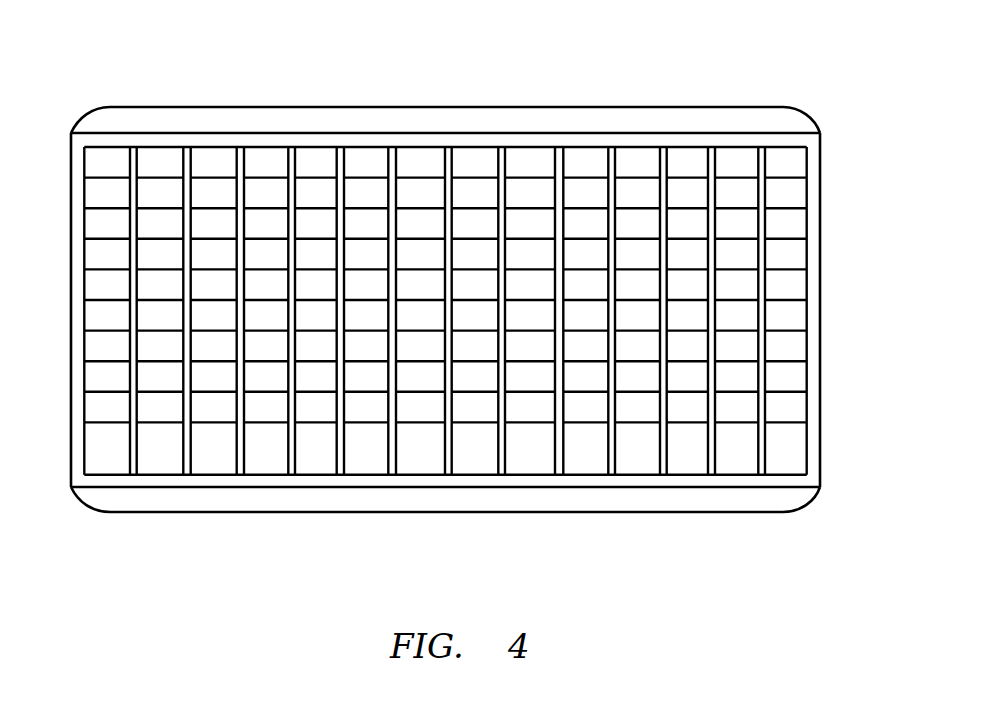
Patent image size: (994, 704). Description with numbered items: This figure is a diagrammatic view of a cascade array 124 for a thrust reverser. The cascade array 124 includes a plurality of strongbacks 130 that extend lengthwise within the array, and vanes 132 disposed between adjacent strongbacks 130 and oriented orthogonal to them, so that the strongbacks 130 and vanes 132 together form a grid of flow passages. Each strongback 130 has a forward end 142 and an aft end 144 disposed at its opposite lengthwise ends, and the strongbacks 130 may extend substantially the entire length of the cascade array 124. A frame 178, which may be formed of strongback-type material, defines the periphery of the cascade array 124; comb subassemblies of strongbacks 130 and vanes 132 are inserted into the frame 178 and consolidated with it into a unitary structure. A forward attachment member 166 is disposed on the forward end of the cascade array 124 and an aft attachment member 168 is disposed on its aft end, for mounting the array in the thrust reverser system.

The cascade array 124 is at (818, 88).
The strongbacks 130 is at (388, 158).
The vanes 132 is at (645, 177).
The forward end 142 is at (687, 521).
The aft end 144 is at (688, 103).
The forward attachment member 166 is at (372, 497).
The aft attachment member 168 is at (243, 118).
The frame 178 is at (815, 312).